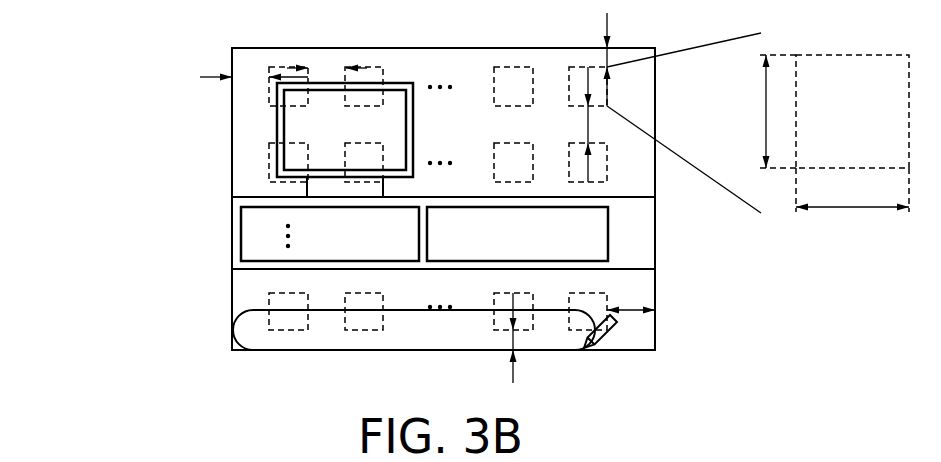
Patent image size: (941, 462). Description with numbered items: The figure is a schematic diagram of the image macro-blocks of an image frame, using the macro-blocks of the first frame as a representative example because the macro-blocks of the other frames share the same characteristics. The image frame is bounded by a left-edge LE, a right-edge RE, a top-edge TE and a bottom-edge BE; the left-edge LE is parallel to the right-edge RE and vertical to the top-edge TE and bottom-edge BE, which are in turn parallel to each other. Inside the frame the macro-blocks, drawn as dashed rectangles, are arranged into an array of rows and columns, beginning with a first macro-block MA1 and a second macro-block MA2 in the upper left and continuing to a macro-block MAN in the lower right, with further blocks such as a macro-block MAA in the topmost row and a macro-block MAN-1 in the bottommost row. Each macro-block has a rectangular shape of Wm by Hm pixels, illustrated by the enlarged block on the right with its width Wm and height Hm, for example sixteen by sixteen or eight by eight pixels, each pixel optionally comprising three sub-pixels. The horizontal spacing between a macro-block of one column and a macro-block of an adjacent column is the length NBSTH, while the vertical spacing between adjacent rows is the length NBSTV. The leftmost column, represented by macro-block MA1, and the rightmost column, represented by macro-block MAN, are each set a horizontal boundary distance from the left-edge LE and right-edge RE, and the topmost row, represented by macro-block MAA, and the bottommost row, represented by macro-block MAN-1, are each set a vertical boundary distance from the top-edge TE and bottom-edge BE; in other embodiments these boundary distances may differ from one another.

The image macro-block MA1 is at (268, 94).
The image macro-block MA2 is at (358, 107).
The image macro-block MAA is at (583, 67).
The image macro-block MAN is at (590, 293).
The image macro-block MAN-1 is at (494, 317).
The horizontal inter-block distance NBSTH is at (318, 68).
The vertical inter-block distance NBSTV is at (540, 124).
The top-edge TE is at (464, 48).
The right-edge RE is at (655, 213).
The left-edge LE is at (232, 291).
The bottom-edge BE is at (338, 350).
The macro-block height Hm is at (769, 111).
The macro-block width Wm is at (852, 190).